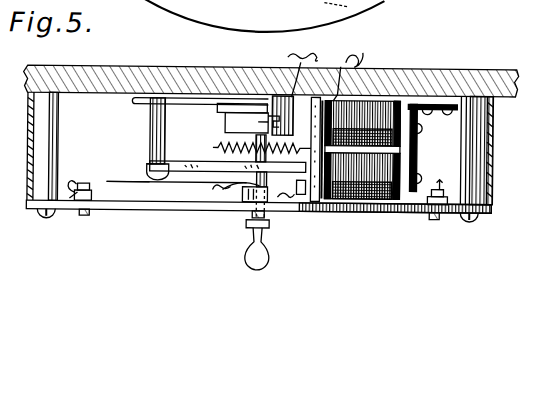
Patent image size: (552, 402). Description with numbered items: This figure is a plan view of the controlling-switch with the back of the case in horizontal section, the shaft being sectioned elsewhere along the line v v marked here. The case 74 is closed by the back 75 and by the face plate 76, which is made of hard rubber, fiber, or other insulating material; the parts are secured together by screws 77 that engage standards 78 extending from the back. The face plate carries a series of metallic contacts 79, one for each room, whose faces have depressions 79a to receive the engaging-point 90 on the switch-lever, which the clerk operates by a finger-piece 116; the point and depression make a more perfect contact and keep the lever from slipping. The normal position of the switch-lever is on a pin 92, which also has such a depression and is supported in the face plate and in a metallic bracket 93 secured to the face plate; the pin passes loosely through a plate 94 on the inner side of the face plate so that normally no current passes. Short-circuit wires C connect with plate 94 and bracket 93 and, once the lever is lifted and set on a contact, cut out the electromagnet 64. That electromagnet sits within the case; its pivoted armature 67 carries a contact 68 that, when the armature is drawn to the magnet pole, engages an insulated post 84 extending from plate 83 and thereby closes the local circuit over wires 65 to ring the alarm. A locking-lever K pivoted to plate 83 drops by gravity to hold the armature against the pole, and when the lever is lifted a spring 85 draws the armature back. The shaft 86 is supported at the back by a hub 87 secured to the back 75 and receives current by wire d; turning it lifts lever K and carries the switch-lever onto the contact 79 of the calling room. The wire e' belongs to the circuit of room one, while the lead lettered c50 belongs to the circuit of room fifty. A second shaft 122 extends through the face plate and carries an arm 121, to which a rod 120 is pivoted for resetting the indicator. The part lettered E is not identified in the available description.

The back 75 is at (470, 72).
The case 74 is at (492, 147).
The face plate 76 is at (393, 213).
The pin 92 is at (183, 204).
The screws 77 is at (473, 222).
The depressions 79a is at (88, 218).
The section line v v is at (80, 189).
The wire e' is at (66, 215).
The casing E is at (128, 220).
The plate 83 is at (142, 95).
The rod 120 is at (133, 106).
The arm 121 is at (197, 108).
The locking-lever K is at (148, 166).
The spring 85 is at (196, 160).
The shaft 86 is at (243, 146).
The post 84 is at (314, 144).
The shaft 122 is at (248, 118).
The contact 68 is at (298, 192).
The electromagnet 64 is at (393, 135).
The electromagnet corresponding to room 50 c50 is at (448, 215).
The metallic contacts 79 is at (430, 219).
The standards 78 is at (493, 191).
The bracket 93 is at (238, 205).
The engaging-point 90 is at (247, 219).
The wires C is at (212, 195).
The plate 94 is at (276, 201).
The finger-piece 116 is at (261, 268).
The wire d is at (213, 98).
The hub 87 is at (248, 94).
The armature 67 is at (308, 100).
The wires 65 is at (336, 71).